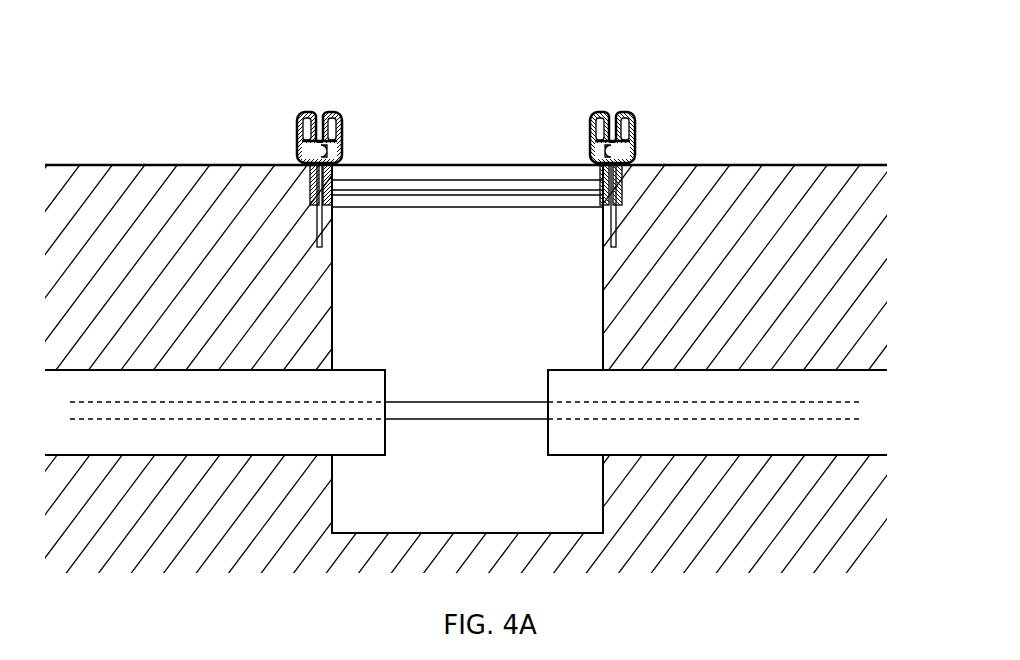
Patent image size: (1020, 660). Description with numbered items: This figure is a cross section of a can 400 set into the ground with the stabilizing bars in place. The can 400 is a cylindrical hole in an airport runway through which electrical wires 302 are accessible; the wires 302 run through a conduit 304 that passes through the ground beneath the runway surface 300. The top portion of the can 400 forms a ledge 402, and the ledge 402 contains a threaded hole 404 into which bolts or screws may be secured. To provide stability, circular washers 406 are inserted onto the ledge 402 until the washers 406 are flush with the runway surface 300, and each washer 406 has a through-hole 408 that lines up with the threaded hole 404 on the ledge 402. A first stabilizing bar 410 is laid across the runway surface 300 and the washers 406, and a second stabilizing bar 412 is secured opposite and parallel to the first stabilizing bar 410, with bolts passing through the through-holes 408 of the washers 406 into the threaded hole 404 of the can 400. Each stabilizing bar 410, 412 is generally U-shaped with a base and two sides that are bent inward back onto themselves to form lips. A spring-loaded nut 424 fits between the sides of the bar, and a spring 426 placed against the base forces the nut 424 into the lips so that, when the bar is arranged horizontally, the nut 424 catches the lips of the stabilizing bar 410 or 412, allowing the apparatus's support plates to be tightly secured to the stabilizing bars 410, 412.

The runway surface 300 is at (133, 164).
The wires 302 is at (443, 410).
The conduit 304 is at (213, 380).
The can 400 is at (488, 108).
The ledge 402 is at (626, 213).
The threaded hole 404 is at (316, 243).
The washer 406 is at (451, 179).
The through-hole 408 is at (319, 212).
The first stabilizing bar 410 is at (631, 118).
The second stabilizing bar 412 is at (311, 112).
The spring-loaded nut 424 is at (338, 140).
The spring 426 is at (297, 147).